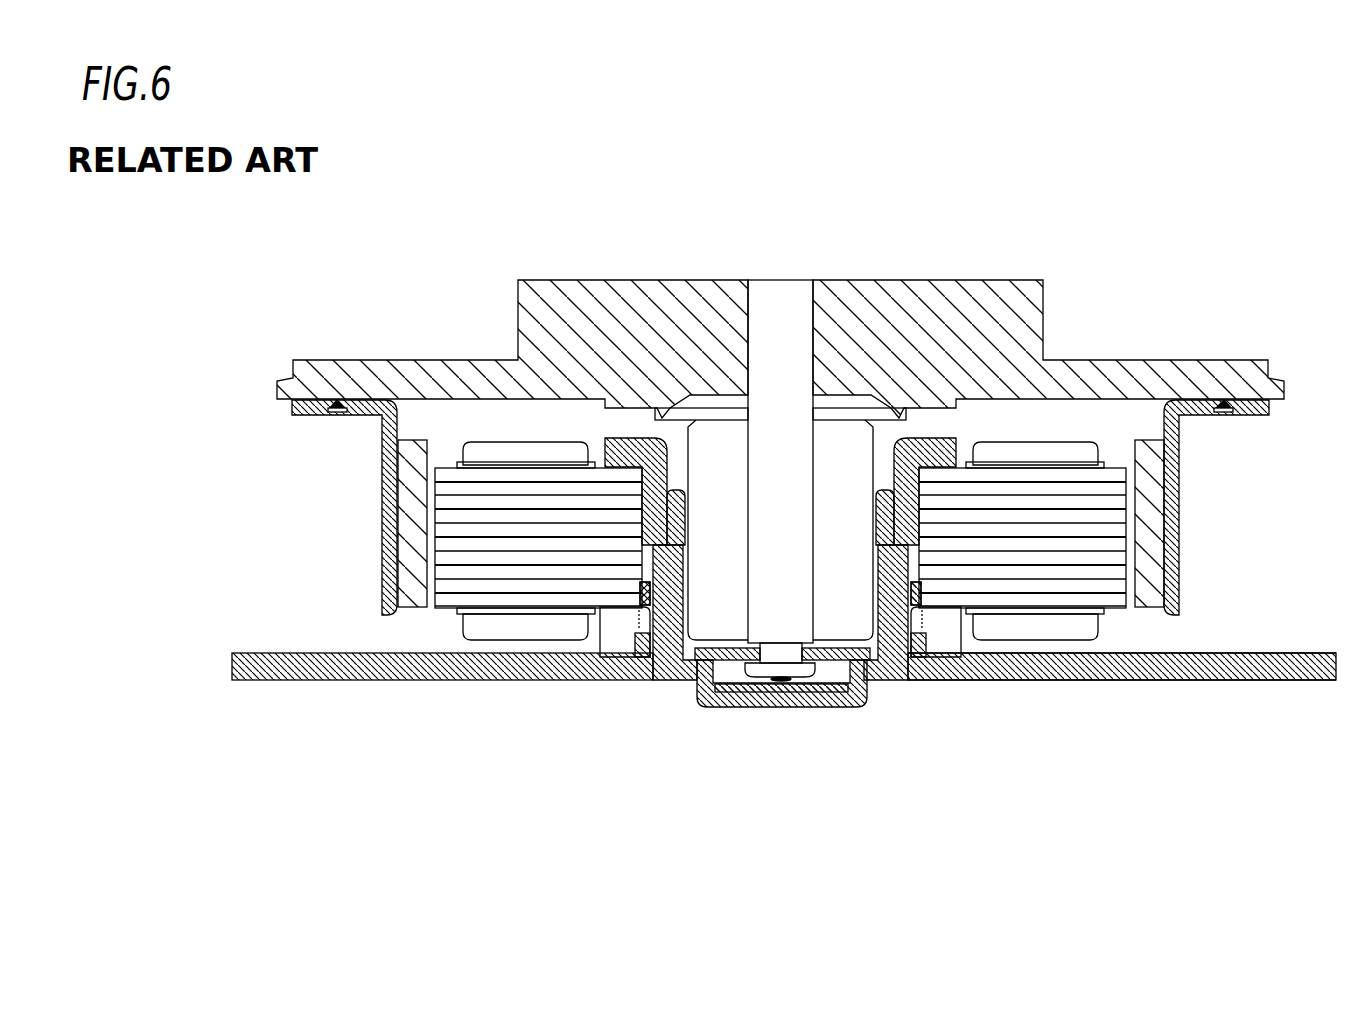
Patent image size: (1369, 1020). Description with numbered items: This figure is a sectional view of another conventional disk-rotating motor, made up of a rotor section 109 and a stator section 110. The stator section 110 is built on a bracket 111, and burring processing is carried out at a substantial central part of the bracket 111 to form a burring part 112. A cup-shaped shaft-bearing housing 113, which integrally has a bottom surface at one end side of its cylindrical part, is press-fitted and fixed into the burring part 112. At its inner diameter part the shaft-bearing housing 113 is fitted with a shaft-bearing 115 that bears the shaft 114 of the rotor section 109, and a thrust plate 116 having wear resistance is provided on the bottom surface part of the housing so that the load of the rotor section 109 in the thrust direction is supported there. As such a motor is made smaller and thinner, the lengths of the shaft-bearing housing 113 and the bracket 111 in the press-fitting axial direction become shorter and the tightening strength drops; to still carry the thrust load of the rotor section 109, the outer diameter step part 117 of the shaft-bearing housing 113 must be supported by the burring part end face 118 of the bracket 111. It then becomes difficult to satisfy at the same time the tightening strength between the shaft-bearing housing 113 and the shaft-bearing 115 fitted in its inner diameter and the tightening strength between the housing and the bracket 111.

The rotor section 109 is at (418, 358).
The stator section 110 is at (1041, 683).
The bracket 111 is at (1193, 668).
The burring part 112 is at (640, 625).
The shaft-bearing housing 113 is at (683, 680).
The shaft 114 is at (783, 330).
The shaft-bearing 115 is at (709, 455).
The thrust plate 116 is at (827, 690).
The outer diameter step part 117 is at (642, 567).
The burring part end face 118 is at (925, 540).